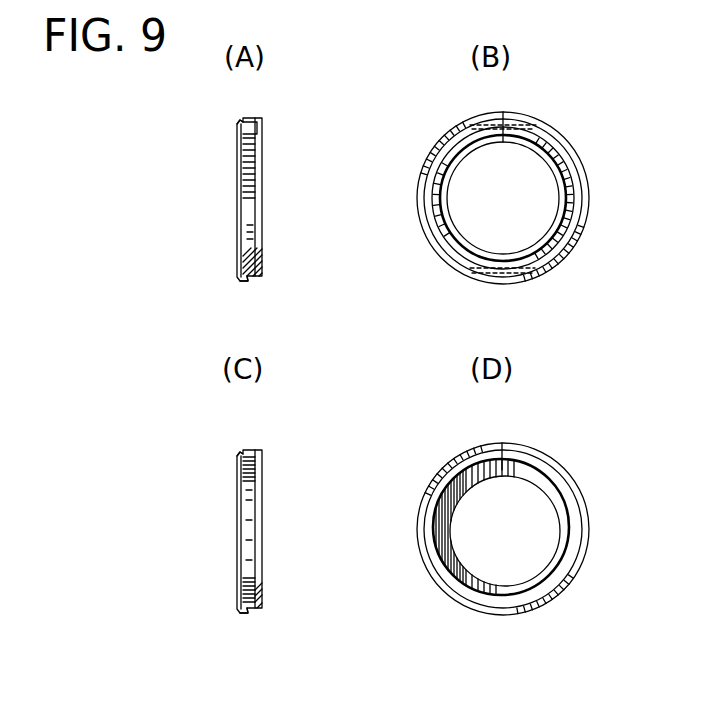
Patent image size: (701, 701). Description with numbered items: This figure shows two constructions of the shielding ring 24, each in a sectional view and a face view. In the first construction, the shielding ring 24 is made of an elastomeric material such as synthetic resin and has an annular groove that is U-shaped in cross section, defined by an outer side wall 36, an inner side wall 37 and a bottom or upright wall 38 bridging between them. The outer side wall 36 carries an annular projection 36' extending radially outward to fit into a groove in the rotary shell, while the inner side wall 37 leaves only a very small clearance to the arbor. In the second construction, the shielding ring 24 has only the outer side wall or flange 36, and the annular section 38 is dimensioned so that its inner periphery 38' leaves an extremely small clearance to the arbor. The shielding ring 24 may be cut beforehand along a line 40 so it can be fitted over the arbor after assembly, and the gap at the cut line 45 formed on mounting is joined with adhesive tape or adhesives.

The shielding ring 24 is at (235, 200).
The outer side wall 36 is at (410, 375).
The annular projection 36' is at (244, 423).
The inner side wall 37 is at (254, 178).
The bottom or upright wall 38 is at (408, 360).
The inner periphery 38' is at (406, 529).
The cut line 40 is at (503, 455).
The cut line 45 is at (503, 125).